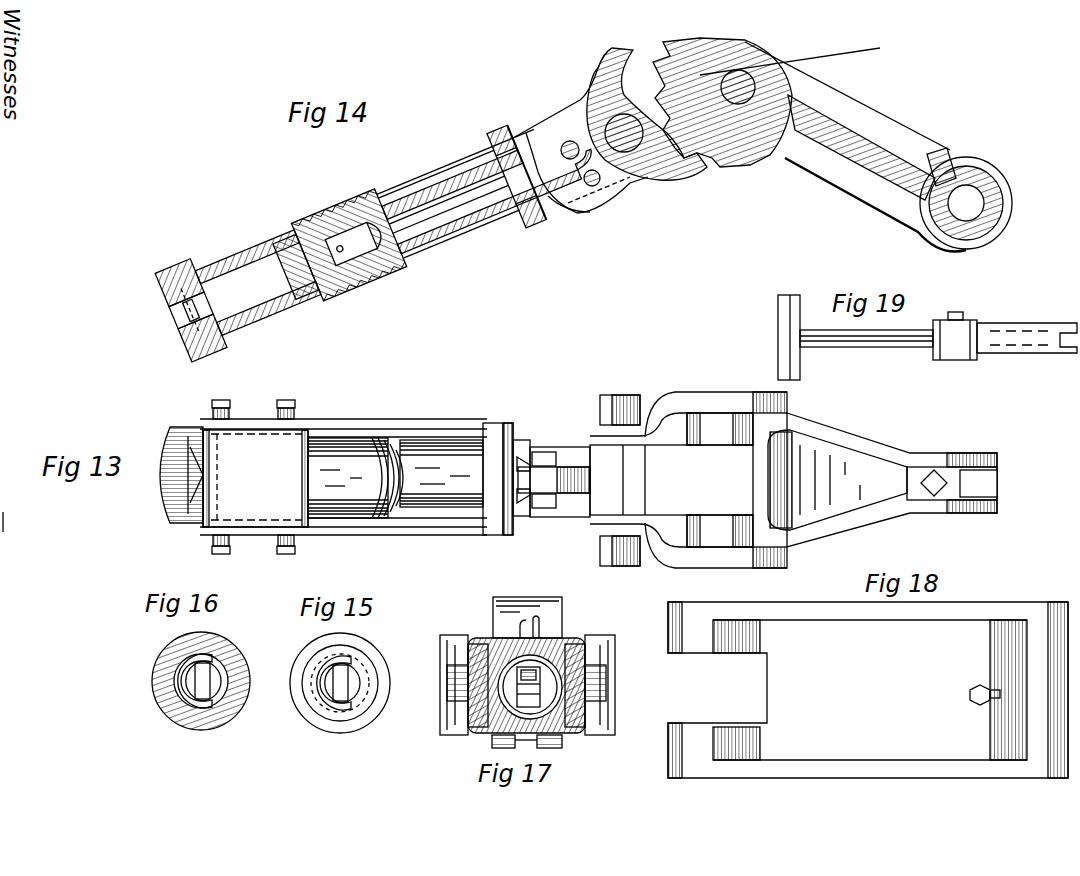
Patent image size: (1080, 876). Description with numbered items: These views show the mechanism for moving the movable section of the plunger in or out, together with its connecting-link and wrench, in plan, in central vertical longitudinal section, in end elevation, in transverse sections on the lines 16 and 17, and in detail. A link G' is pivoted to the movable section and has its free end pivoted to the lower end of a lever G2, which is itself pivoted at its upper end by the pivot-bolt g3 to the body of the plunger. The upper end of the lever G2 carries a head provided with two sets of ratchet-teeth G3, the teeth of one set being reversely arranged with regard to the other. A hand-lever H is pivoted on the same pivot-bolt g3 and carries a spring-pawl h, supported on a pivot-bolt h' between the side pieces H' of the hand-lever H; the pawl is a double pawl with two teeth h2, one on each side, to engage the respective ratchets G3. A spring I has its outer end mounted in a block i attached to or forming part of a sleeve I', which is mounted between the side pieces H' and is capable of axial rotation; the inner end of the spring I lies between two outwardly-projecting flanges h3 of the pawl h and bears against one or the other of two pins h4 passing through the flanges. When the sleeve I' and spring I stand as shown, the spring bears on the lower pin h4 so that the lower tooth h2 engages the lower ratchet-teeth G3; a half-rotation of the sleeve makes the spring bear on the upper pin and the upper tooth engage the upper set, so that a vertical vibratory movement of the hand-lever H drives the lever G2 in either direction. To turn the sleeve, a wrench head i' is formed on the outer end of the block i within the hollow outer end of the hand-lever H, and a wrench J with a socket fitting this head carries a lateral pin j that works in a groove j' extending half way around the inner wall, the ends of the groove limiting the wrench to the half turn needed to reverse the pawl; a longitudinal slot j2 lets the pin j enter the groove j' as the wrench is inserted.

In FIG. 14, the section line 16 16 is at (178, 262).
In FIG. 14, the section line 17 17 is at (498, 128).
In FIG. 14, the hand-lever H is at (311, 238).
In FIG. 14, the side pieces H' is at (476, 212).
In FIG. 13, the side pieces H' is at (323, 479).
In FIG. 17, the side pieces H' is at (531, 698).
In FIG. 14, the spring I is at (469, 225).
In FIG. 13, the spring I is at (506, 453).
In FIG. 17, the spring I is at (542, 719).
In FIG. 14, the sleeve I' is at (490, 225).
In FIG. 13, the sleeve I' is at (395, 447).
In FIG. 17, the sleeve I' is at (515, 710).
In FIG. 14, the block i is at (352, 254).
In FIG. 14, the wrench head i' is at (295, 291).
In FIG. 16, the wrench head i' is at (203, 675).
In FIG. 15, the wrench head i' is at (346, 677).
In FIG. 14, the spring-pawl h is at (580, 130).
In FIG. 13, the spring-pawl h is at (572, 525).
In FIG. 14, the pivot-bolt h' is at (631, 183).
In FIG. 14, the pawl teeth h2 is at (609, 52).
In FIG. 13, the pawl teeth h2 is at (608, 560).
In FIG. 17, the pawl teeth h2 is at (527, 660).
In FIG. 14, the outwardly-projecting flanges h3 is at (600, 212).
In FIG. 13, the outwardly-projecting flanges h3 is at (550, 455).
In FIG. 14, the pins h4 is at (570, 160).
In FIG. 13, the pins h4 is at (563, 467).
In FIG. 17, the pins h4 is at (542, 680).
In FIG. 18, the link G' is at (868, 690).
In FIG. 14, the lever G2 is at (872, 192).
In FIG. 13, the lever G2 is at (882, 480).
In FIG. 14, the ratchet-teeth G3 is at (706, 42).
In FIG. 13, the ratchet-teeth G3 is at (688, 480).
In FIG. 14, the pivot-bolt g3 is at (790, 62).
In FIG. 19, the wrench J is at (927, 335).
In FIG. 19, the pin j is at (955, 323).
In FIG. 16, the groove j' is at (181, 707).
In FIG. 15, the longitudinal groove or slot j2 is at (318, 688).